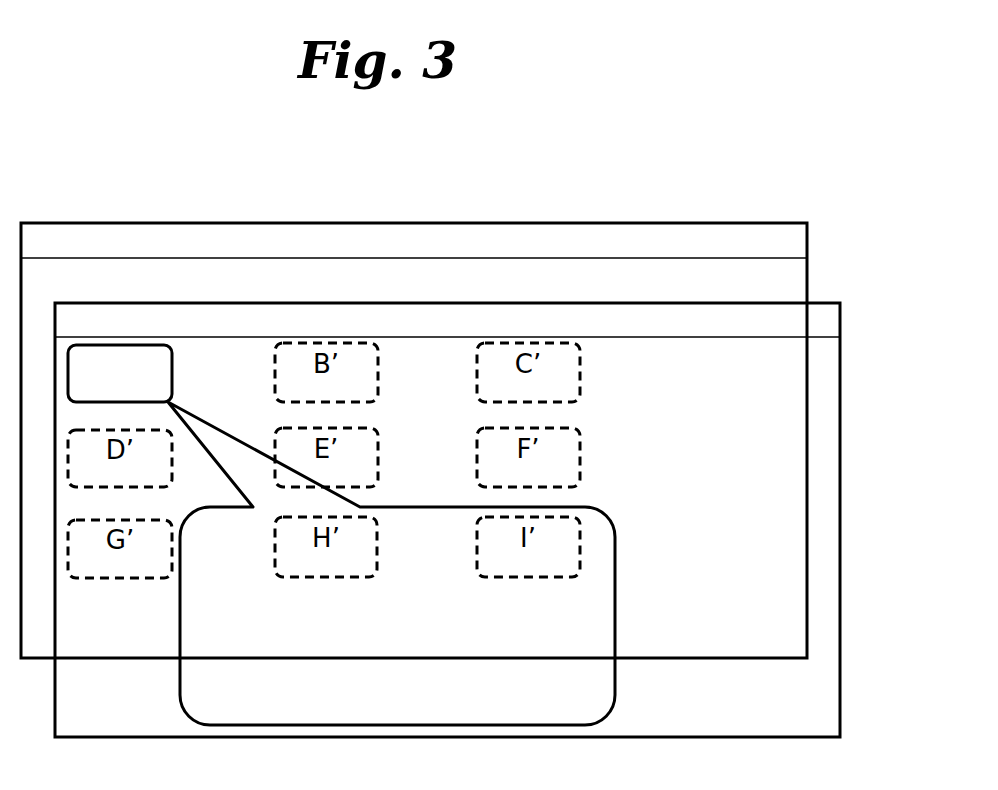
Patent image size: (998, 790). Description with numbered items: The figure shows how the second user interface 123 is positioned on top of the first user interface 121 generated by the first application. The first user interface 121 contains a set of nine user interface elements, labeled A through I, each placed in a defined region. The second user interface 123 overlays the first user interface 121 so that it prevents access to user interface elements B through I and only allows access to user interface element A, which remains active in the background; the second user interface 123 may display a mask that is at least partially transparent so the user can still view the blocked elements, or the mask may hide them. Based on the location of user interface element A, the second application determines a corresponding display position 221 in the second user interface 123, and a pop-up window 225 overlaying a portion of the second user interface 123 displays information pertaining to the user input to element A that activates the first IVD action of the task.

The first user interface 121 is at (807, 243).
The second user interface 123 is at (840, 360).
The display position 221 is at (175, 396).
The pop-up window 225 is at (615, 542).